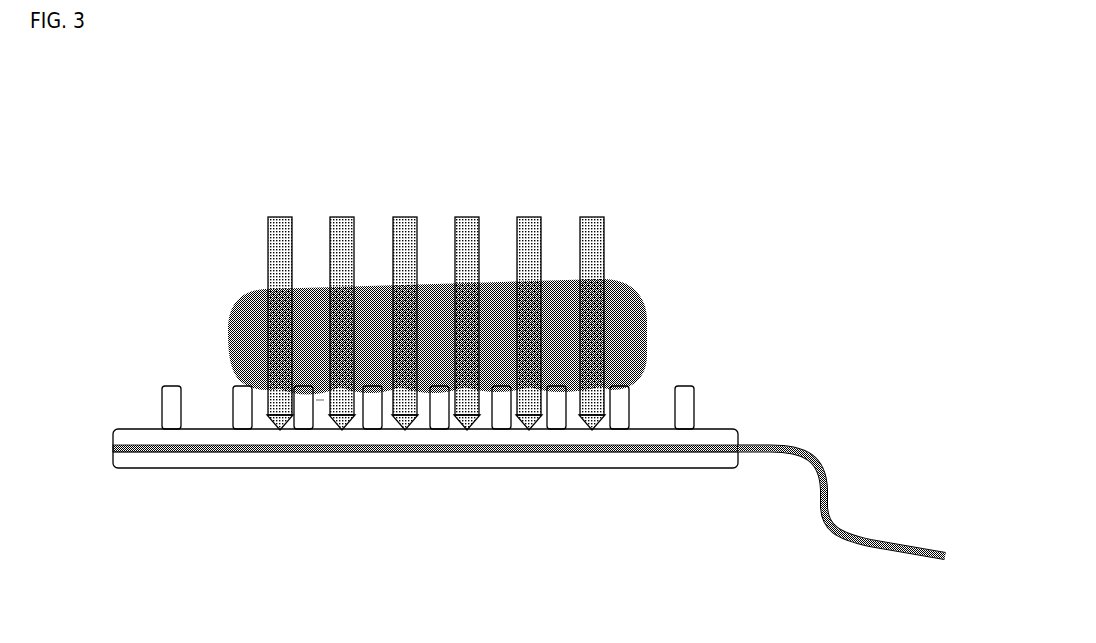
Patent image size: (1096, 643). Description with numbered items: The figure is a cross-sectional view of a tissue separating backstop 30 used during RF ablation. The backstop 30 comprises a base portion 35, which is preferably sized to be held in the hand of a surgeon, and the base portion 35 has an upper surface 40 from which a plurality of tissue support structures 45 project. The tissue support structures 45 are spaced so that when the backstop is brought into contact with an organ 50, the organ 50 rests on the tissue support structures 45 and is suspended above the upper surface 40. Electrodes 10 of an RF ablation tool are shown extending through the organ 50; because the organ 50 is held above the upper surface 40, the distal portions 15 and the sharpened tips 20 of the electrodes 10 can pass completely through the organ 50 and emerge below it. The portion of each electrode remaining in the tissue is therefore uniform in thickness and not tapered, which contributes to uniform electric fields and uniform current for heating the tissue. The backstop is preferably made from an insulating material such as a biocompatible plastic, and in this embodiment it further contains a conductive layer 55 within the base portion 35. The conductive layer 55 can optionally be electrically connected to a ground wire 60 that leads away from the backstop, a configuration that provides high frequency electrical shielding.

The electrodes 10 is at (274, 262).
The distal portions 15 is at (314, 410).
The sharpened tips 20 is at (352, 434).
The tissue separating backstop 30 is at (468, 348).
The base portion 35 is at (536, 472).
The upper surface 40 is at (512, 474).
The tissue support structures 45 is at (698, 392).
The organ 50 is at (639, 320).
The conductive layer 55 is at (579, 460).
The ground wire 60 is at (810, 533).